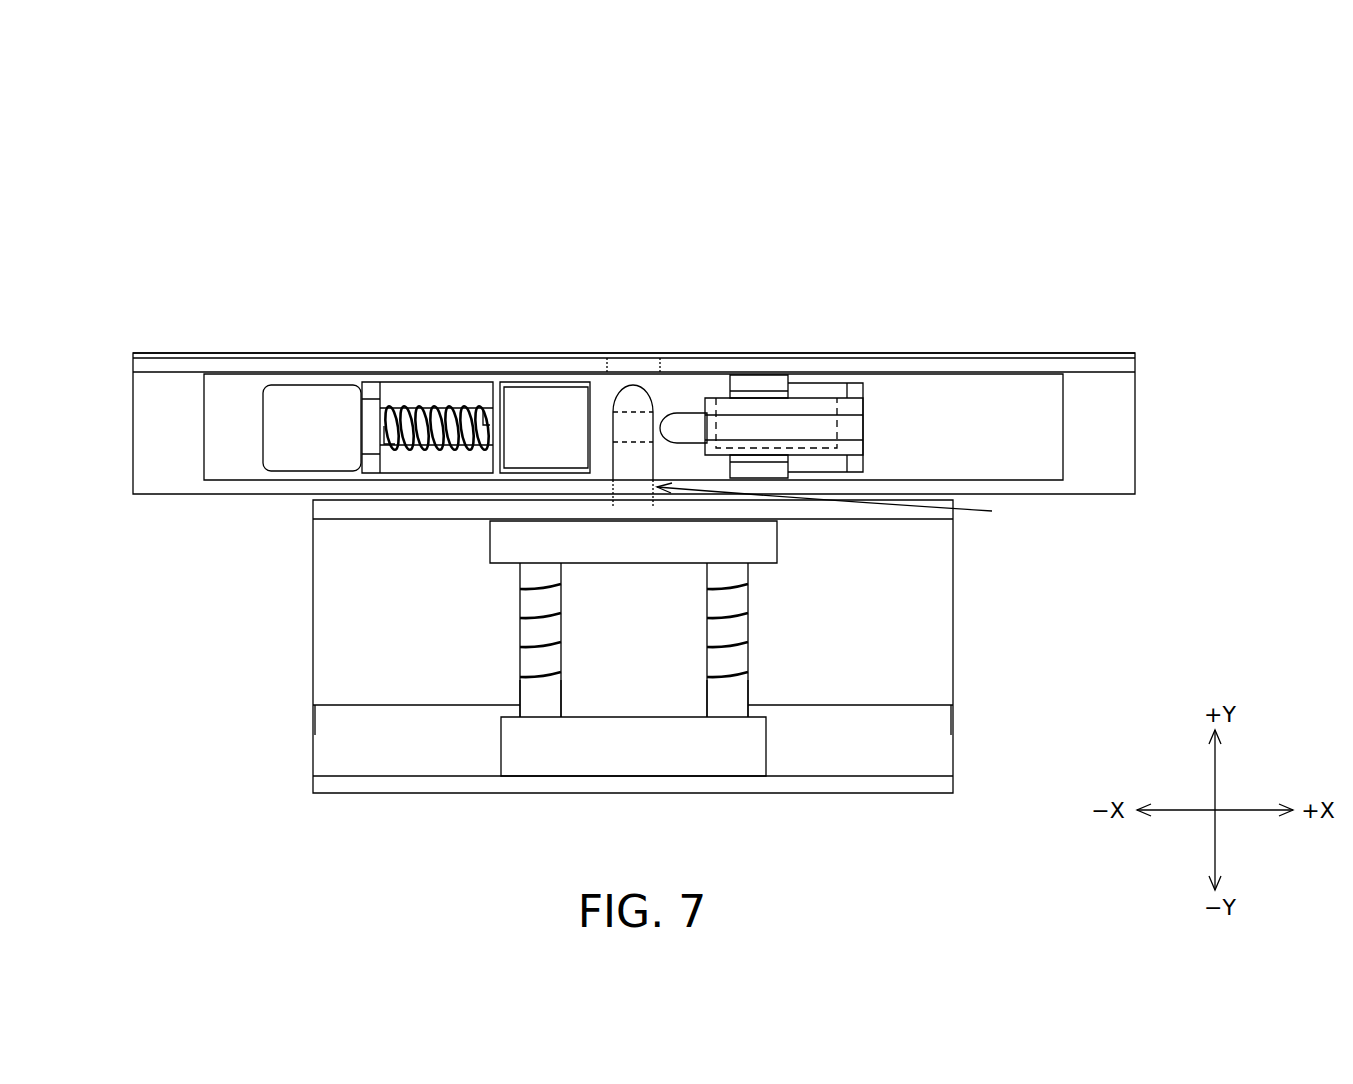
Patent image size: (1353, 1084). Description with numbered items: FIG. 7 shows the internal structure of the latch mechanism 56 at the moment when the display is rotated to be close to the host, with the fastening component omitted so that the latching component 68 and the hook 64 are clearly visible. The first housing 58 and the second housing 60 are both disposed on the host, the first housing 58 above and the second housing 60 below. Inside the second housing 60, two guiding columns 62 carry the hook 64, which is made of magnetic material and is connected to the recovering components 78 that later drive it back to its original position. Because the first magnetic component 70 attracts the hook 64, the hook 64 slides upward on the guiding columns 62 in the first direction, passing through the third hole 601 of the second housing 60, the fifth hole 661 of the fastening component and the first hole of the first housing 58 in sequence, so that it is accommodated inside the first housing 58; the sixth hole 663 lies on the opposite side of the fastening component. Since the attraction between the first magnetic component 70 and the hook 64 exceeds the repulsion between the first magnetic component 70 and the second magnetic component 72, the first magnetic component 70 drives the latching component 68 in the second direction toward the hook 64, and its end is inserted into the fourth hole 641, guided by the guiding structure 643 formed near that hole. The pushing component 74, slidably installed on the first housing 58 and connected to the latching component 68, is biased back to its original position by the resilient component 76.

The latch mechanism 56 is at (1118, 240).
The first housing 58 is at (1135, 358).
The second housing 60 is at (957, 658).
The third hole 601 is at (659, 509).
The guiding column 62 is at (532, 596).
The hook 64 is at (682, 353).
The fourth hole 641 is at (656, 416).
The guiding structure 643 is at (652, 420).
The fifth hole 661 is at (850, 504).
The sixth hole 663 is at (617, 367).
The latching component 68 is at (688, 420).
The first magnetic component 70 is at (838, 425).
The second magnetic component 72 is at (538, 402).
The pushing component 74 is at (223, 398).
The resilient component 76 is at (445, 403).
The recovering component 78 is at (538, 677).